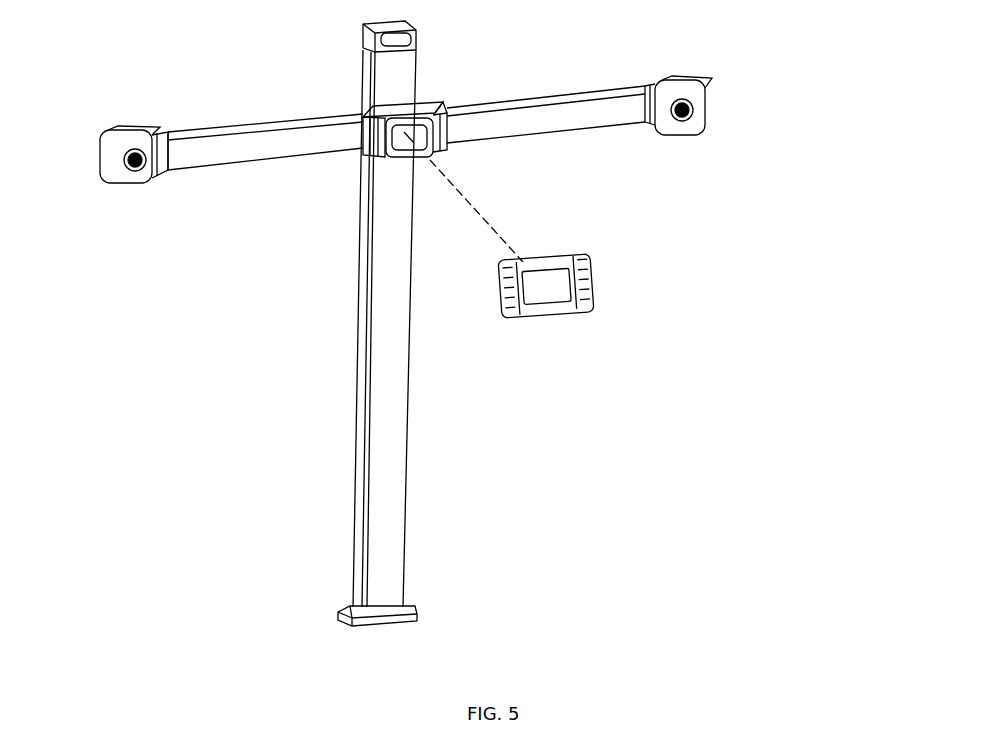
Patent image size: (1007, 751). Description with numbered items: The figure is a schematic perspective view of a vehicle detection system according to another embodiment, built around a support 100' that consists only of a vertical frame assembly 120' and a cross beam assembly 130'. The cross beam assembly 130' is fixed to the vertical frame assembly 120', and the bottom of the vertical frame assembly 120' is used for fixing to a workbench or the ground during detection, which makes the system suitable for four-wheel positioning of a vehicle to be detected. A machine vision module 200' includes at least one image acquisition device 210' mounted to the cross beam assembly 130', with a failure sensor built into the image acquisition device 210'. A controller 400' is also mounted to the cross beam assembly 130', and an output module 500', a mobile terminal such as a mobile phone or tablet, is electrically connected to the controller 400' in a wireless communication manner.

The support 100' is at (401, 323).
The vertical frame assembly 120' is at (322, 323).
The cross beam assembly 130' is at (406, 188).
The machine vision module 200' is at (480, 103).
The image acquisition device 210' is at (442, 103).
The controller 400' is at (444, 99).
The output module 500' is at (546, 239).